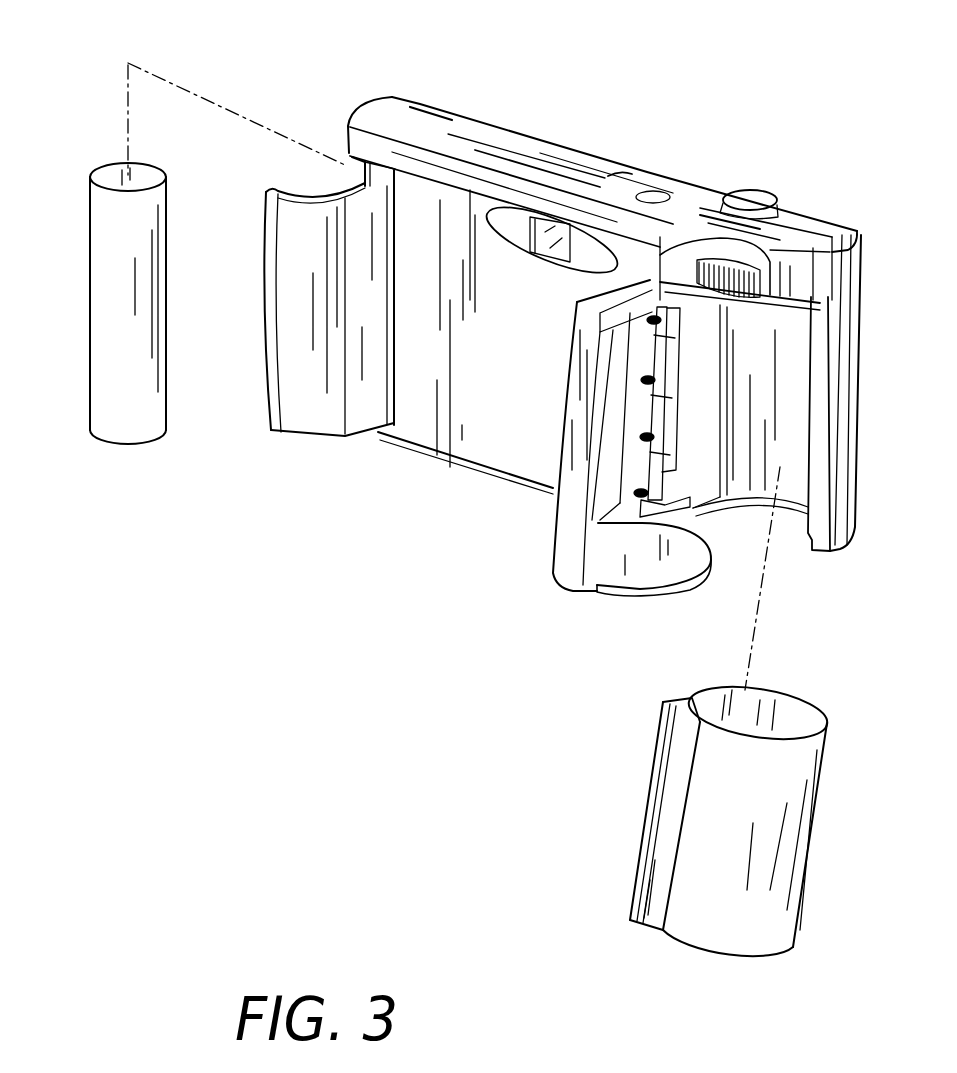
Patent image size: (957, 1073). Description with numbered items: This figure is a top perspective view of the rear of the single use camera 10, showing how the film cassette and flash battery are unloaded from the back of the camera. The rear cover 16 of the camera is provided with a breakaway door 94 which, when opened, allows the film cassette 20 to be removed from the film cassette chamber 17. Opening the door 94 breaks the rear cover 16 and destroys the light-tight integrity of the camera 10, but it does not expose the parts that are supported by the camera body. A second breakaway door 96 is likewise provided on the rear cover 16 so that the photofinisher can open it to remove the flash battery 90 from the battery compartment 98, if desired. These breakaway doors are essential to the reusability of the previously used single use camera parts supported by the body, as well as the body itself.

The single use camera 10 is at (476, 100).
The rear cover 16 is at (494, 447).
The film cassette chamber 17 is at (795, 428).
The film cassette 20 is at (821, 767).
The flash battery 90 is at (92, 256).
The breakaway door 94 is at (644, 592).
The second breakaway door 96 is at (300, 400).
The battery compartment 98 is at (352, 173).